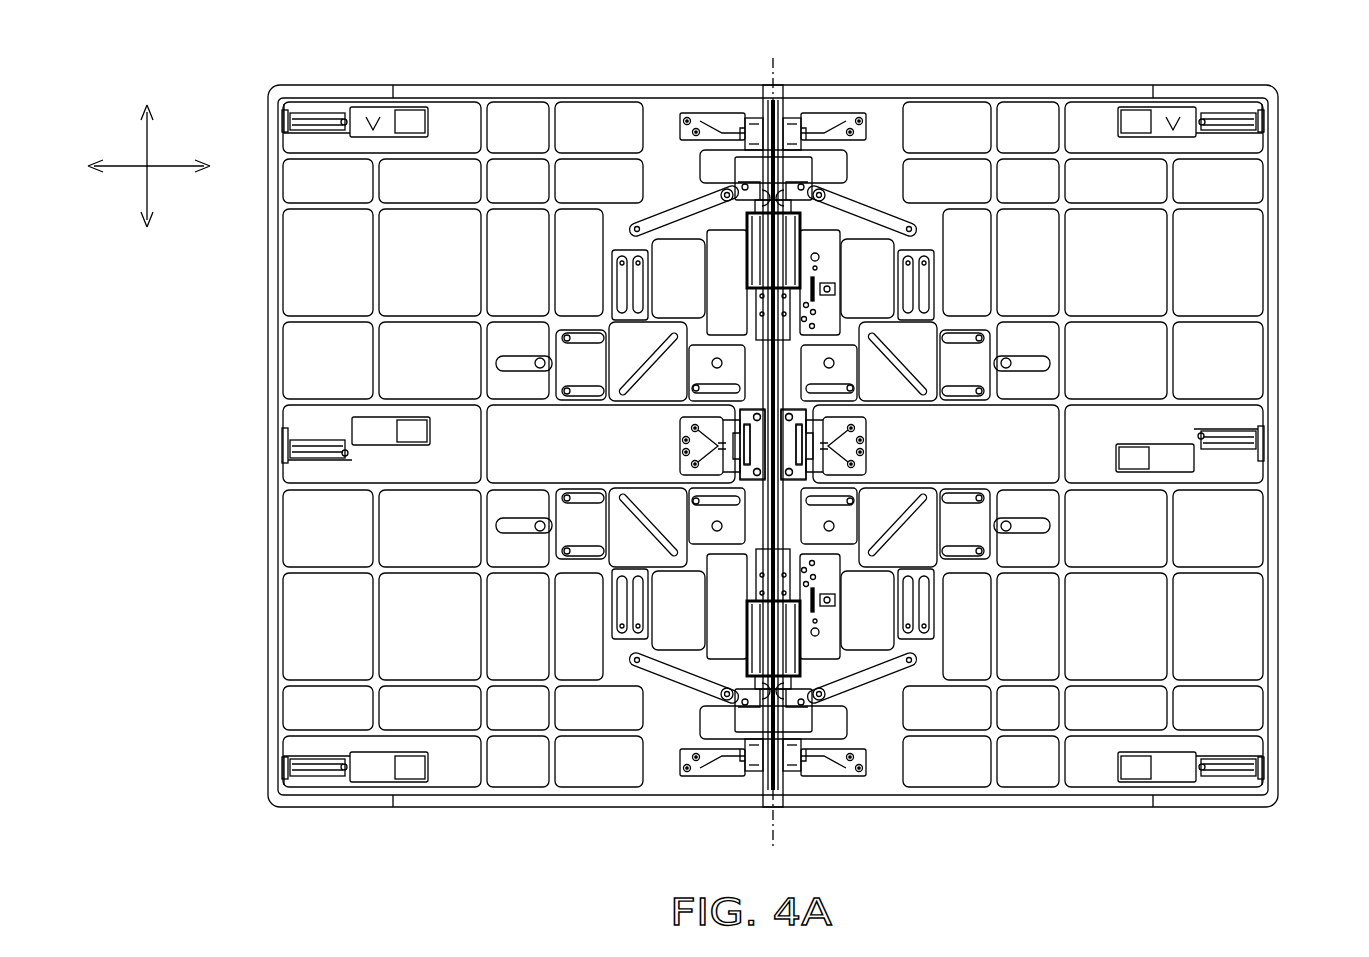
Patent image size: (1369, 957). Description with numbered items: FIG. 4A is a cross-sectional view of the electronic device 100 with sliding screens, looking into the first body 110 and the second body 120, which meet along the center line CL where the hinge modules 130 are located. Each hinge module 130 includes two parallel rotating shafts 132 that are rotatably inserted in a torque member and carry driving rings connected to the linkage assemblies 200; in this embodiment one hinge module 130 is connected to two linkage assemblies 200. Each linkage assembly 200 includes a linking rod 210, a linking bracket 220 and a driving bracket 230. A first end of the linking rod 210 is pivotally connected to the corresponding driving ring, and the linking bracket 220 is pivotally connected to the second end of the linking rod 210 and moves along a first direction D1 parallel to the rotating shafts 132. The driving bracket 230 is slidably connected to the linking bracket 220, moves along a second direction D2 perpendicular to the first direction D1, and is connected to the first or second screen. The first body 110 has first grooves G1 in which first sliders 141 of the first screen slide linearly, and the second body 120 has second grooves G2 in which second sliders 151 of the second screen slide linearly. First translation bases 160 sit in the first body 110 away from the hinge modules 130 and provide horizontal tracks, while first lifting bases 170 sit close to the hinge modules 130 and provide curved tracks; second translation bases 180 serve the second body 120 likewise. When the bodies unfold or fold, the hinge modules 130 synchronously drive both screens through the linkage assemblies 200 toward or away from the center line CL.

The electronic device with sliding screens 100 is at (1347, 823).
The first body 110 is at (533, 98).
The second body 120 is at (950, 125).
The hinge module 130 is at (800, 178).
The rotating shaft 132 is at (790, 233).
The first slider 141 is at (680, 430).
The second slider 151 is at (1130, 118).
The first translation base 160 is at (315, 118).
The first lifting base 170 is at (690, 447).
The second translation base 180 is at (1238, 123).
The linkage assembly 200 is at (782, 451).
The linking rod 210 is at (700, 204).
The linking bracket 220 is at (617, 252).
The driving bracket 230 is at (653, 340).
The first groove G1 is at (372, 128).
The second groove G2 is at (1176, 125).
The center line CL is at (775, 466).
The first direction D1 is at (152, 150).
The second direction D2 is at (128, 168).